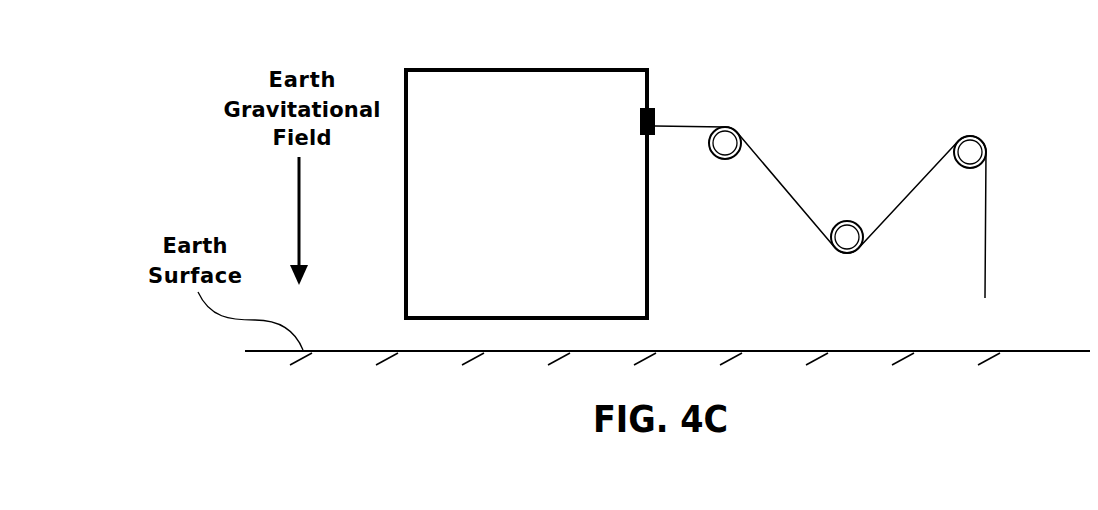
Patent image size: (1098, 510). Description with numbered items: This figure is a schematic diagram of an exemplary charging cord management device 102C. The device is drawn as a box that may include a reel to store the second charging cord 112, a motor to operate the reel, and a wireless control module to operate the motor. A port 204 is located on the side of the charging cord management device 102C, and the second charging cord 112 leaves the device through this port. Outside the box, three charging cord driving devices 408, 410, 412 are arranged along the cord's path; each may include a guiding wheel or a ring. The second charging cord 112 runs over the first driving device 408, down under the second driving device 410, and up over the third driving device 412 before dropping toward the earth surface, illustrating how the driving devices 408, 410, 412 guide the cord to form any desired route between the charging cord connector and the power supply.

The charging cord management device 102C is at (543, 68).
The port 204 is at (638, 116).
The second charging cord 112 is at (787, 190).
The charging cord driving device 408 is at (717, 160).
The charging cord driving device 410 is at (853, 222).
The charging cord driving device 412 is at (983, 135).